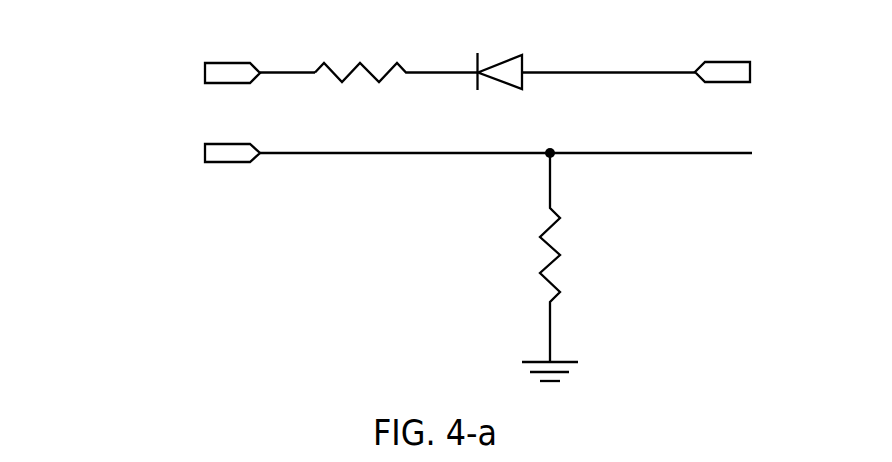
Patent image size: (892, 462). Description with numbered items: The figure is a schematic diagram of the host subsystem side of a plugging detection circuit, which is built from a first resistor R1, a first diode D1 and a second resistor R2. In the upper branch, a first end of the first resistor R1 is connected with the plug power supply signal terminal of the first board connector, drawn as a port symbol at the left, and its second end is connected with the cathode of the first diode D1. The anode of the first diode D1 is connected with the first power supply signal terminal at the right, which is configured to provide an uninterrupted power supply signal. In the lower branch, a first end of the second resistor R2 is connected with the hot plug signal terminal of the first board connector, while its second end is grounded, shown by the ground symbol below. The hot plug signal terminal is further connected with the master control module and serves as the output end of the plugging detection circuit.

The first resistor R1 is at (396, 50).
The first diode D1 is at (500, 50).
The second resistor R2 is at (567, 267).